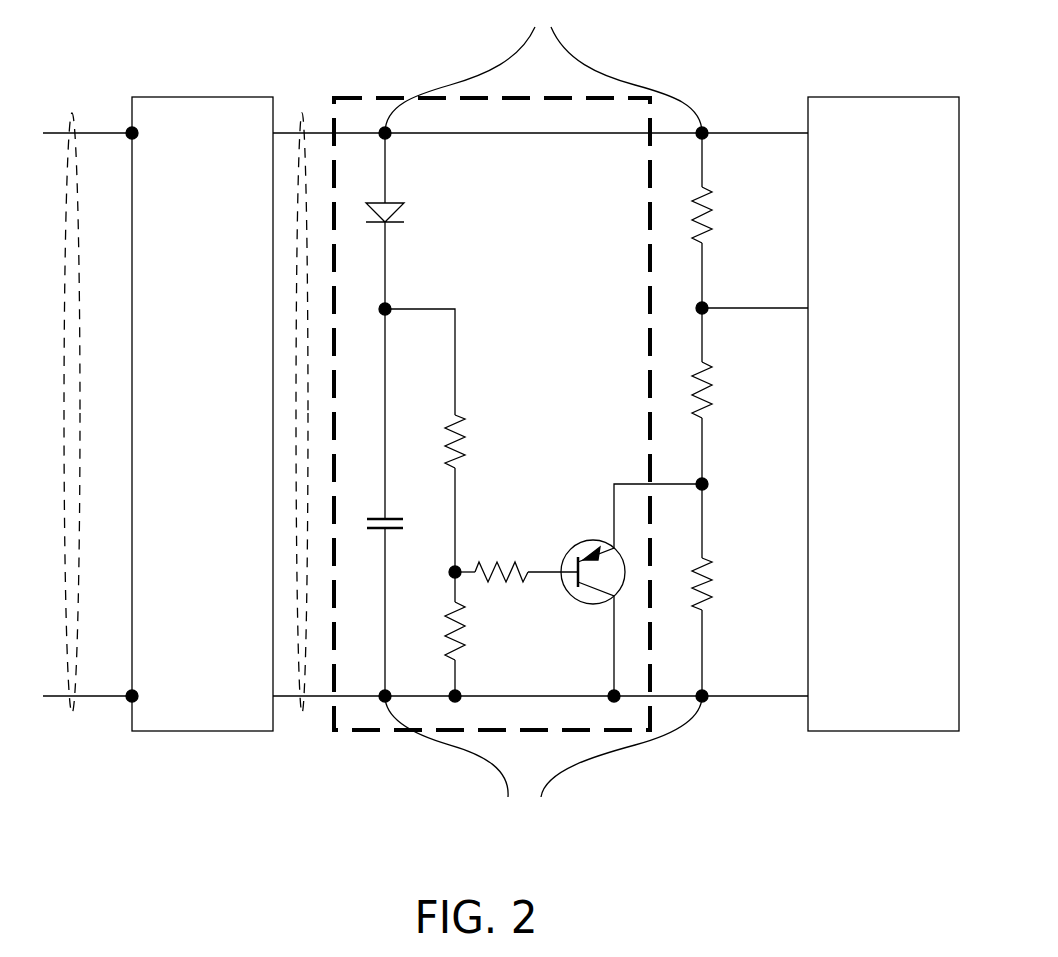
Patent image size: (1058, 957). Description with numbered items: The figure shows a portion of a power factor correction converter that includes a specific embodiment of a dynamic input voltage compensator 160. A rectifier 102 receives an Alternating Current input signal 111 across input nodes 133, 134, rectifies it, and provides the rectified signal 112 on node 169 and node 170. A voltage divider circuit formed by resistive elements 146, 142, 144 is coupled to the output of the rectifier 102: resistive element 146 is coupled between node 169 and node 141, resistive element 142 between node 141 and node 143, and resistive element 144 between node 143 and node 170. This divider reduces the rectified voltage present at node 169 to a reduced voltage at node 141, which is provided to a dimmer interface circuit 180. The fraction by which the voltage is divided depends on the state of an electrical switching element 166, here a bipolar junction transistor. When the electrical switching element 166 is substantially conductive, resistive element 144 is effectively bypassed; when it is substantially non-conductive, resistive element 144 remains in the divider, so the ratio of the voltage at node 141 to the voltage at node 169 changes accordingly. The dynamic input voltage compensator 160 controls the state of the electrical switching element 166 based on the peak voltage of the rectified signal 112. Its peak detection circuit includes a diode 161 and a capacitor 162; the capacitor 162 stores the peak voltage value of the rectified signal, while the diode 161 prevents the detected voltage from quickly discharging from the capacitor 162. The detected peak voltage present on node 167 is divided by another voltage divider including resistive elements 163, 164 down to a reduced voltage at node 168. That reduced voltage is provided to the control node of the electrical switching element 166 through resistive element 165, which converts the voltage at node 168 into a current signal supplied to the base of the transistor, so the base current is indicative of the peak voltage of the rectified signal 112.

The rectifier 102 is at (184, 438).
The dimmer interface circuit 180 is at (866, 468).
The AC input signal 111 is at (72, 114).
The rectified signal 112 is at (302, 114).
The input node 133 is at (130, 131).
The input node 134 is at (130, 700).
The dynamic input voltage compensator 160 is at (350, 97).
The diode 161 is at (398, 224).
The capacitor 162 is at (391, 520).
The resistive element 163 is at (463, 462).
The resistive element 164 is at (463, 652).
The resistive element 165 is at (488, 566).
The electrical switching element 166 is at (583, 543).
The node 167 is at (391, 312).
The node 168 is at (452, 576).
The node 169 is at (543, 71).
The node 170 is at (543, 754).
The node 141 is at (707, 312).
The resistive element 142 is at (708, 410).
The node 143 is at (707, 488).
The resistive element 144 is at (708, 605).
The resistive element 146 is at (708, 235).